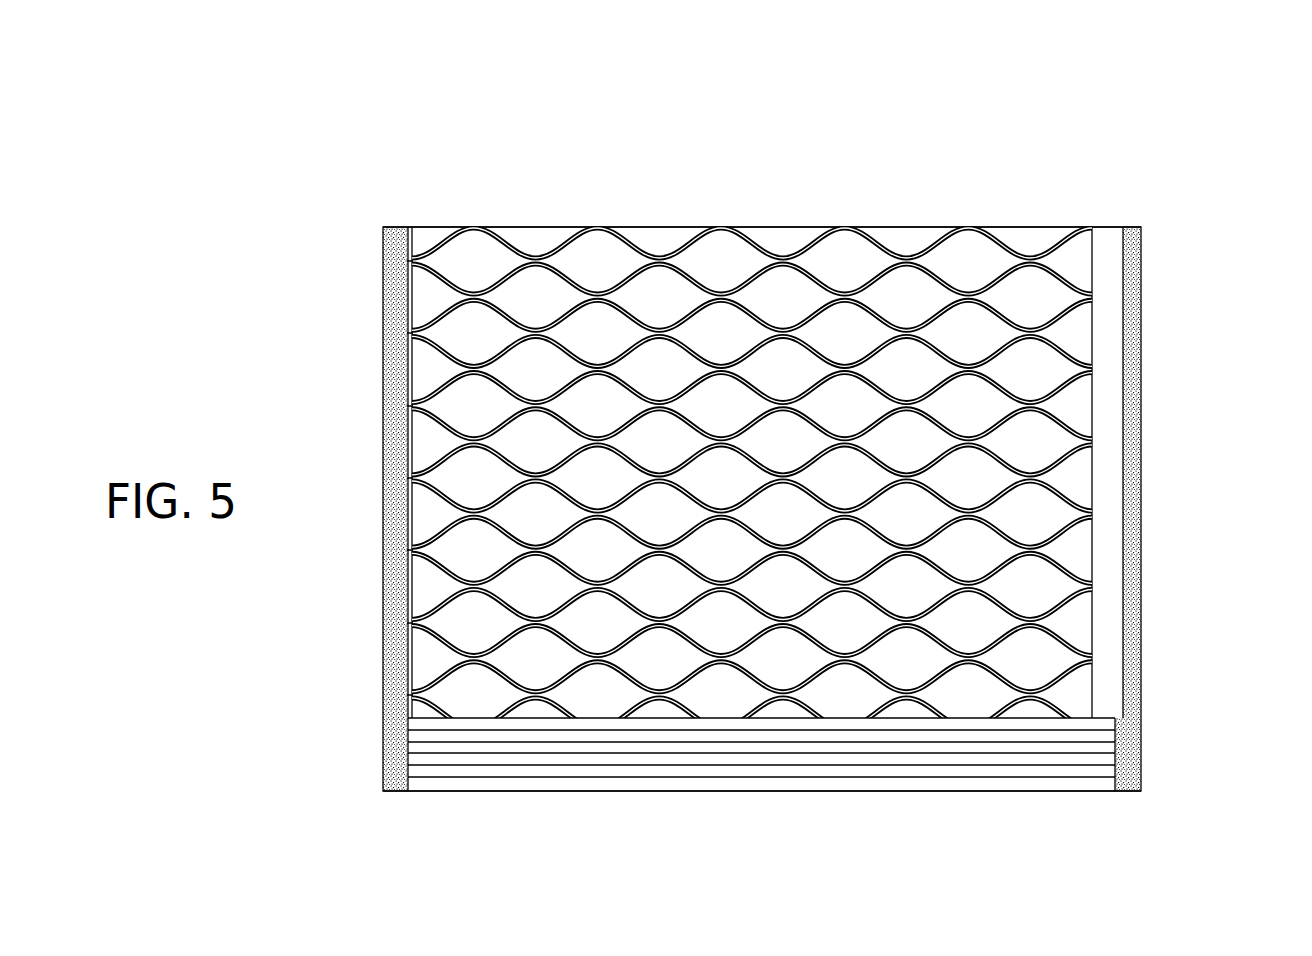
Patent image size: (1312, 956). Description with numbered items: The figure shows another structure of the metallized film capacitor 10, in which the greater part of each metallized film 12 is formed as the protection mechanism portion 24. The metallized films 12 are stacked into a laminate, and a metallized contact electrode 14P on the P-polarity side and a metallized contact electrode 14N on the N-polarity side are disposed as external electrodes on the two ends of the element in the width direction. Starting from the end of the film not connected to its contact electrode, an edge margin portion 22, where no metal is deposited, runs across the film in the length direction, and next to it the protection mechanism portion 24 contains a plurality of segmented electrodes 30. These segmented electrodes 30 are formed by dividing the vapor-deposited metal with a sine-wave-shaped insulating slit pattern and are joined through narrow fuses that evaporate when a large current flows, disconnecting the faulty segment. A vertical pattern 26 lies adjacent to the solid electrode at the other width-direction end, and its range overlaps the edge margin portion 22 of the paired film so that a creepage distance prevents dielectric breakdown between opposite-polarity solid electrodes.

The metallized film capacitor 10 is at (933, 145).
The metallized film 12 is at (670, 722).
The metallized contact electrode on the P-polarity side 14P is at (383, 598).
The metallized contact electrode on the N-polarity side 14N is at (1140, 590).
The edge margin portion 22 is at (1107, 240).
The protection mechanism portion 24 is at (805, 217).
The vertical pattern 26 is at (410, 224).
The segmented electrode 30 is at (599, 260).